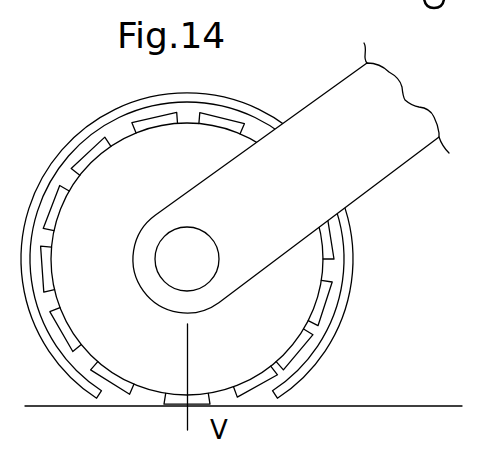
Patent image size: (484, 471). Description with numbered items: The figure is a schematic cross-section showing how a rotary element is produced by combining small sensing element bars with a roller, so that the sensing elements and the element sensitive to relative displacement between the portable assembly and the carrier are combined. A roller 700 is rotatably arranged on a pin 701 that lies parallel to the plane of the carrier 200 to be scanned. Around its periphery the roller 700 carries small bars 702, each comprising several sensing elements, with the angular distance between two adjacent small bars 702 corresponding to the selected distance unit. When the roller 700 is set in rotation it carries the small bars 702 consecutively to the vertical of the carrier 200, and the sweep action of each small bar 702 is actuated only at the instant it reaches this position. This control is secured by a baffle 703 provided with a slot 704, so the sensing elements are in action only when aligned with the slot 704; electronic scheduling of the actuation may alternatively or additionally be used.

The carrier 200 is at (365, 397).
The roller 700 is at (134, 167).
The pin 701 is at (185, 243).
The small bars 702 is at (328, 230).
The baffle 703 is at (328, 285).
The slot 704 is at (118, 402).